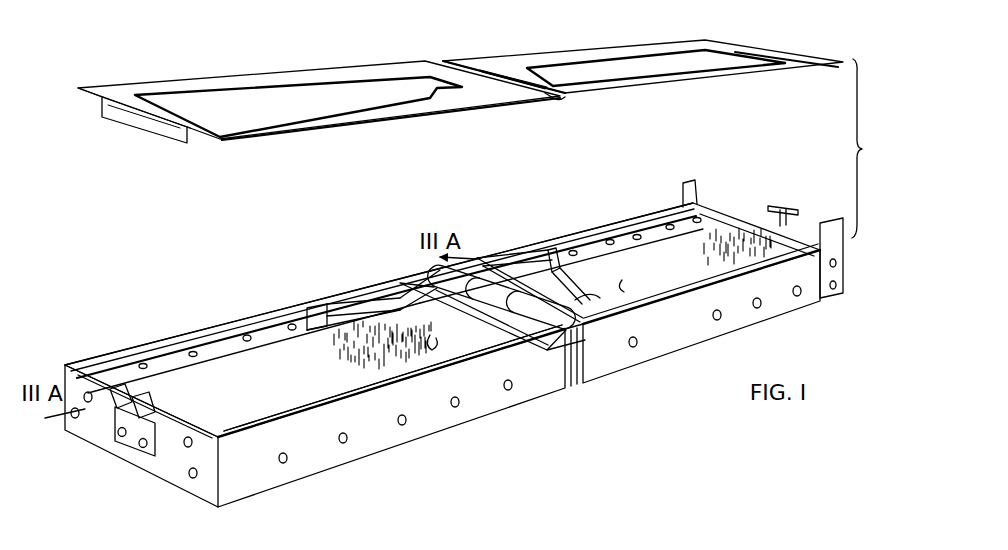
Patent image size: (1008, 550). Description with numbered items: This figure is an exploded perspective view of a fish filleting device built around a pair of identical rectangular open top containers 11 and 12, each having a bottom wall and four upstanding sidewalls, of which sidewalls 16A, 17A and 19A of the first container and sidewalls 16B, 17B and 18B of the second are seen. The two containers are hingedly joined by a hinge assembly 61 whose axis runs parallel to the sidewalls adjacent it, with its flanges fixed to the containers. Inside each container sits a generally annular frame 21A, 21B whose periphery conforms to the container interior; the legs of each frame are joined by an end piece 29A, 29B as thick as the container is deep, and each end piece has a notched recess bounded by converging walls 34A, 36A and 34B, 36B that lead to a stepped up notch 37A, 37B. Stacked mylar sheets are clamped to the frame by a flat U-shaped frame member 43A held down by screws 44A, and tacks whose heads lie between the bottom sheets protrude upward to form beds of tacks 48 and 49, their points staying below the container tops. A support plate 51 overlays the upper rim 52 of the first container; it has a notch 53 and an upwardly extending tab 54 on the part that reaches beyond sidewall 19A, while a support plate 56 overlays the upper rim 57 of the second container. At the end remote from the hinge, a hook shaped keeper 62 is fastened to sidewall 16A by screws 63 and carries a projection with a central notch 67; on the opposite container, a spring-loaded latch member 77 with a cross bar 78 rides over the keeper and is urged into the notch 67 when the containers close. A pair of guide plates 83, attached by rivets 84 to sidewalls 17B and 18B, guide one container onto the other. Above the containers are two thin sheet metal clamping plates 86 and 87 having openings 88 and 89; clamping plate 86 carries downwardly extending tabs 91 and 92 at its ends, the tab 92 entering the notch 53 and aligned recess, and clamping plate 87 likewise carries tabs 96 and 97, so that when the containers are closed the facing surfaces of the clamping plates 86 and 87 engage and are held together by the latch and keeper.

The open top container 11 is at (372, 466).
The open top container 12 is at (675, 354).
The sidewall 16A is at (172, 472).
The sidewall 16B is at (710, 212).
The sidewall 17A is at (190, 346).
The sidewall 17B is at (596, 243).
The sidewall 18B is at (582, 376).
The sidewall 19A is at (478, 406).
The rectangular frame 21A is at (352, 298).
The rectangular frame 21B is at (532, 243).
The end piece 29A is at (374, 302).
The end piece 29B is at (518, 265).
The converging wall 34A is at (330, 302).
The converging wall 34B is at (552, 258).
The converging wall 36A is at (435, 344).
The converging wall 36B is at (630, 286).
The stepped up notch 37A is at (446, 318).
The stepped up notch 37B is at (555, 285).
The U-shaped frame member 43A is at (160, 360).
The screws 44A is at (291, 325).
The bed of tacks 48 is at (340, 358).
The bed of tacks 49 is at (705, 258).
The support plate 51 is at (548, 362).
The upper rim 52 is at (426, 402).
The notch 53 is at (483, 316).
The tab 54 is at (574, 366).
The support plate 56 is at (592, 304).
The upper rim 57 is at (628, 232).
The hinge assembly 61 is at (425, 268).
The hook shaped keeper 62 is at (124, 436).
The screws 63 is at (112, 442).
The notch 67 is at (140, 400).
The latch member 77 is at (778, 219).
The cross bar 78 is at (782, 206).
The guide plates 83 is at (697, 182).
The rivets 84 is at (838, 284).
The clamping plate 86 is at (258, 72).
The clamping plate 87 is at (596, 45).
The opening 88 is at (292, 88).
The opening 89 is at (645, 58).
The tab 91 is at (163, 128).
The tab 92 is at (540, 98).
The tab 96 is at (553, 97).
The tab 97 is at (742, 62).